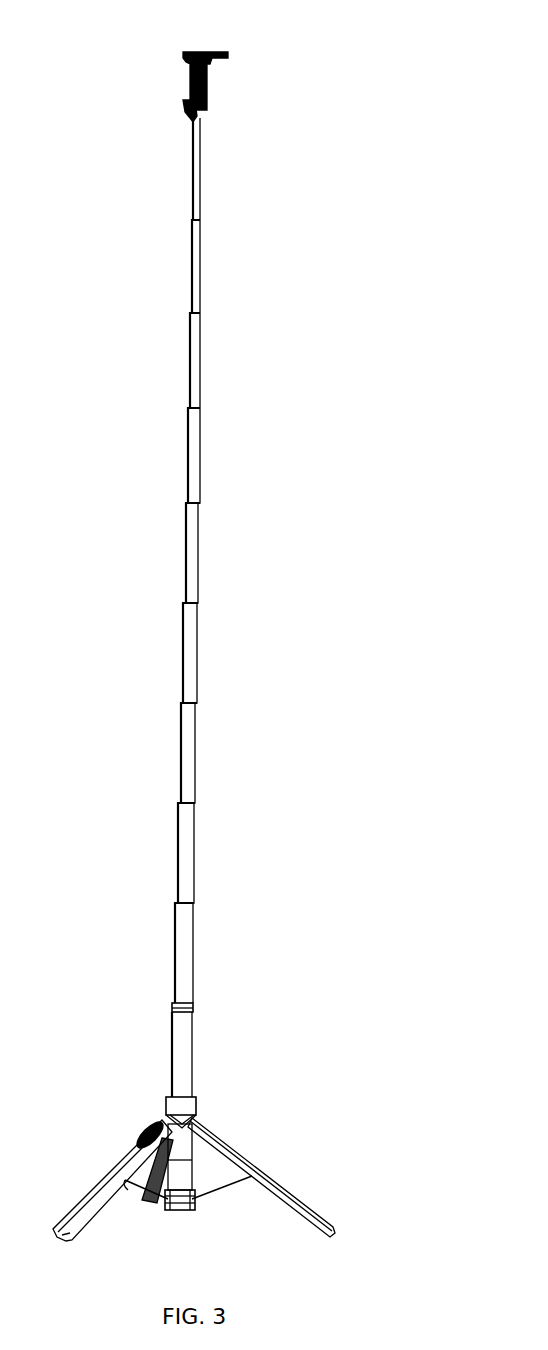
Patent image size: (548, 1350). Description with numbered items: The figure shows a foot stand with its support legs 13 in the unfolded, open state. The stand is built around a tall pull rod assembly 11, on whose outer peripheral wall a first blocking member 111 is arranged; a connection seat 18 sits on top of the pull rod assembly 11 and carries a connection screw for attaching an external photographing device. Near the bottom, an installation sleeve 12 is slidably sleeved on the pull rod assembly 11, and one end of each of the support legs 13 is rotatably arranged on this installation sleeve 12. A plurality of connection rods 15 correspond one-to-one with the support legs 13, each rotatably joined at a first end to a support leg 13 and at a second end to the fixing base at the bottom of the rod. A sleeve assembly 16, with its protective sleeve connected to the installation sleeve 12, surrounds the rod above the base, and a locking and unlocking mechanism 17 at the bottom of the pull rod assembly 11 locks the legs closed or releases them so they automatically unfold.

The pull rod assembly 11 is at (190, 643).
The first blocking member 111 is at (180, 1074).
The installation sleeve 12 is at (193, 1098).
The support legs 13 is at (231, 1152).
The connection rods 15 is at (243, 1170).
The sleeve assembly 16 is at (187, 1162).
The locking and unlocking mechanism 17 is at (168, 1211).
The connection seat 18 is at (200, 53).